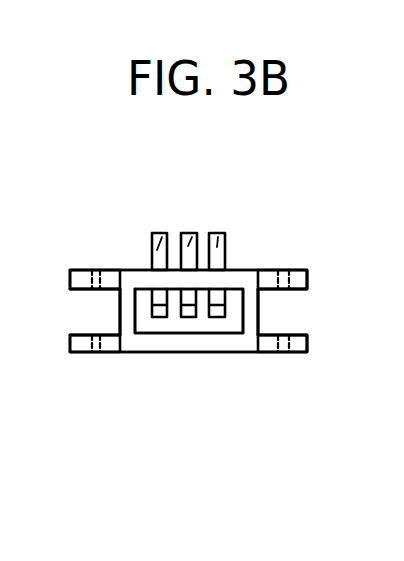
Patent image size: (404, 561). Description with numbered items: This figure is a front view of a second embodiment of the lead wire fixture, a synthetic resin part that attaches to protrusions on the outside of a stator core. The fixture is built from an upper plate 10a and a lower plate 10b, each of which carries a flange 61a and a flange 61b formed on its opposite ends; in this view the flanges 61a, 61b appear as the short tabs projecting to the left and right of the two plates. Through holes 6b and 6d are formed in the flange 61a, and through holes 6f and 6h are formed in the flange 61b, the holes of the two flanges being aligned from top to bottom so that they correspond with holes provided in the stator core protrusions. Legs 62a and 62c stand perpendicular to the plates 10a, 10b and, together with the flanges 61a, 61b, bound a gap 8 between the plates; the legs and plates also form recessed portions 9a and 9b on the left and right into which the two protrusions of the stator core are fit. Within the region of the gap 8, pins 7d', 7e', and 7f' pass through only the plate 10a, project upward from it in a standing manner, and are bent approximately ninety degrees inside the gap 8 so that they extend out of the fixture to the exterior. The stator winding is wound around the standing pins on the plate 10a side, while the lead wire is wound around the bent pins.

The pin 7d' is at (157, 223).
The pin 7e' is at (187, 190).
The pin 7f' is at (217, 220).
The plate 10a is at (236, 278).
The plate 10b is at (203, 342).
The flange 61a is at (70, 277).
The flange 61b is at (70, 342).
The through hole 6b is at (100, 272).
The through hole 6d is at (280, 273).
The through hole 6f is at (88, 357).
The through hole 6h is at (282, 353).
The gap 8 is at (173, 320).
The leg 62a is at (128, 310).
The connecting web 62c is at (250, 308).
The recessed portion 9a is at (95, 310).
The recessed portion 9b is at (295, 312).